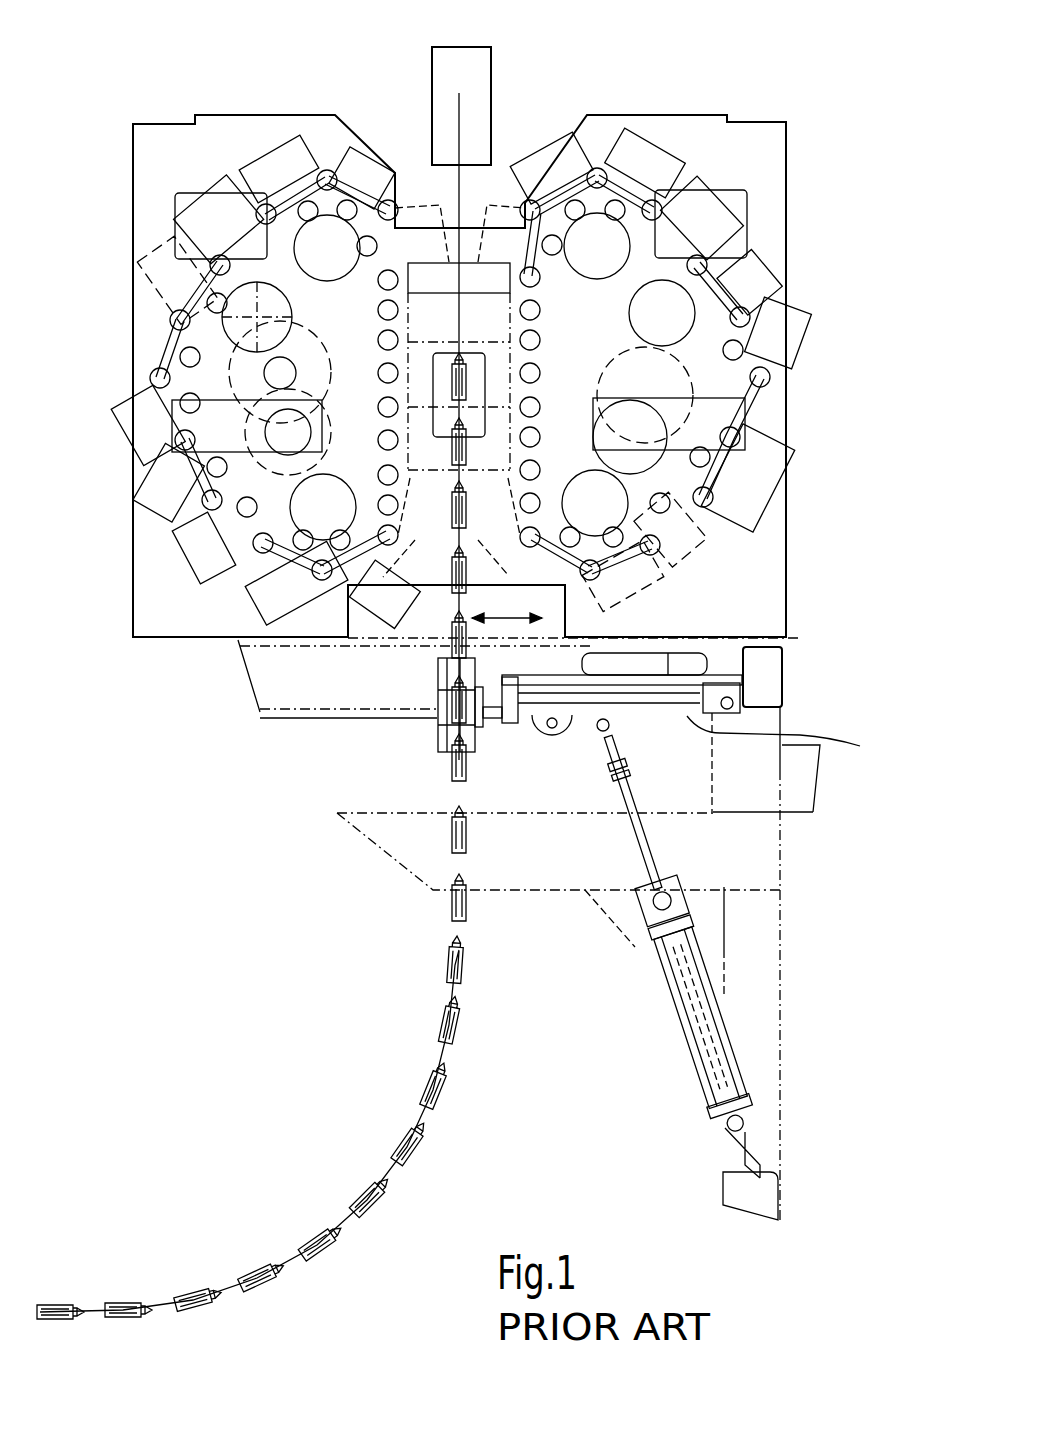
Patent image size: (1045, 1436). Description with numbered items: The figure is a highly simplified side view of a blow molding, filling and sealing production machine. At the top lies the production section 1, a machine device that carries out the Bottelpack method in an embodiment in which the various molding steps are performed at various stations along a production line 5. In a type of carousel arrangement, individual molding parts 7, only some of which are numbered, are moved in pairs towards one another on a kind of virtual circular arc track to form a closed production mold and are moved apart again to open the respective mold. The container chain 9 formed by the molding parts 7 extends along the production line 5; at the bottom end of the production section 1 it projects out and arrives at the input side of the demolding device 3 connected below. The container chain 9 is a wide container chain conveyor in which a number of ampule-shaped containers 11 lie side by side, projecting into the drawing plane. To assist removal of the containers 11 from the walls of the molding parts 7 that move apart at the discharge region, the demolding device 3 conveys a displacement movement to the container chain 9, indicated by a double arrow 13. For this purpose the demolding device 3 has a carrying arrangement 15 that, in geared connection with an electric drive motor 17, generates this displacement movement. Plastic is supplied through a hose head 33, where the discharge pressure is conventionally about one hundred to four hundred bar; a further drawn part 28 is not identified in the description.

The production section 1 is at (802, 228).
The demolding device 3 is at (251, 836).
The production line 5 is at (462, 112).
The molding parts 7 is at (712, 167).
The container chain 9 is at (440, 603).
The containers 11 is at (360, 1195).
The double arrow 13 is at (520, 620).
The carrying arrangement 15 is at (445, 728).
The electric drive motor 17 is at (695, 715).
The pivot joint 28 is at (625, 730).
The hose head 33 is at (490, 72).